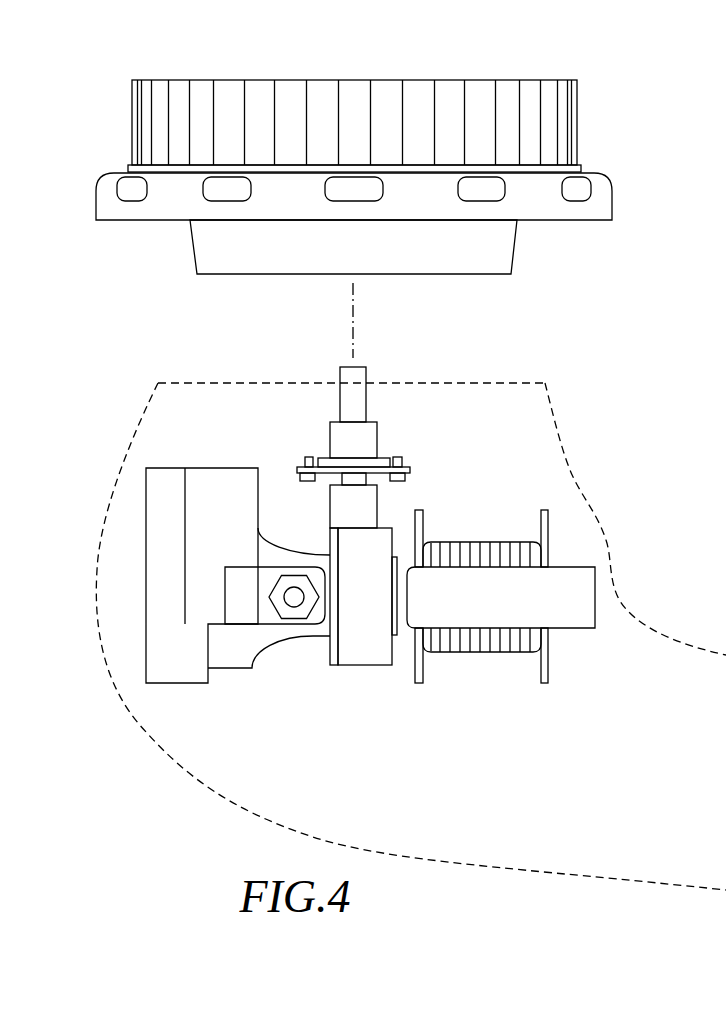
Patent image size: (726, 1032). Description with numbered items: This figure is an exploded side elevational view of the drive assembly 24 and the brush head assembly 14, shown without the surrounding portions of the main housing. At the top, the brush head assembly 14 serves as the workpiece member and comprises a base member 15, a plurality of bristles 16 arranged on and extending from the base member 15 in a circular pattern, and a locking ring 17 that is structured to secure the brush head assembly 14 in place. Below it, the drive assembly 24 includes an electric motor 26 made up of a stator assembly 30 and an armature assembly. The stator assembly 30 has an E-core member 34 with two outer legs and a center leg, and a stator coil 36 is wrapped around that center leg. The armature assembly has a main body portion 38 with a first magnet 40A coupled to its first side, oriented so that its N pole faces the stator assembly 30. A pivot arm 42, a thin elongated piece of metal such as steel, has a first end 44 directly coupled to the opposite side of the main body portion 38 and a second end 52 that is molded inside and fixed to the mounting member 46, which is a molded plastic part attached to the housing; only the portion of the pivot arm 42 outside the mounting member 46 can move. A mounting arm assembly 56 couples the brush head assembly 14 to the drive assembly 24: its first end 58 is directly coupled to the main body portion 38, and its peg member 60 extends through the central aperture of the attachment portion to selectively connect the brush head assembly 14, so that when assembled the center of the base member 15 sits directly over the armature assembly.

The brush head assembly 14 is at (600, 157).
The base member 15 is at (500, 244).
The bristles 16 is at (514, 90).
The locking ring 17 is at (606, 201).
The drive assembly 24 is at (440, 460).
The electric motor 26 is at (440, 498).
The stator assembly 30 is at (492, 534).
The E-core member 34 is at (568, 565).
The stator coil 36 is at (477, 645).
The main body portion 38 is at (378, 542).
The first magnet 40A is at (396, 635).
The pivot arm 42 is at (263, 548).
The first end 44 is at (326, 553).
The mounting member 46 is at (218, 478).
The second end 52 is at (210, 669).
The mounting arm assembly 56 is at (370, 437).
The first end 58 is at (353, 486).
The peg member 60 is at (362, 372).